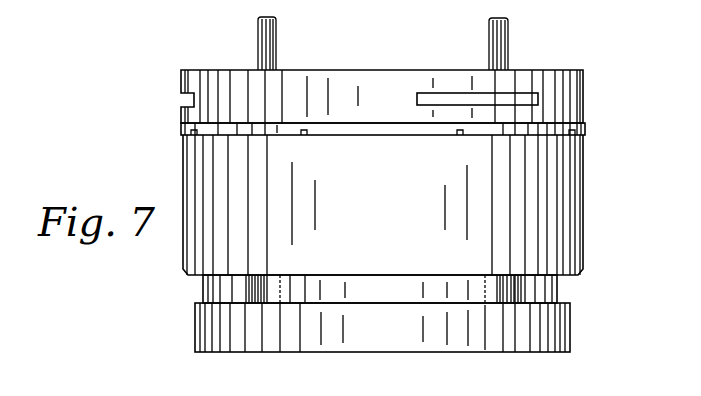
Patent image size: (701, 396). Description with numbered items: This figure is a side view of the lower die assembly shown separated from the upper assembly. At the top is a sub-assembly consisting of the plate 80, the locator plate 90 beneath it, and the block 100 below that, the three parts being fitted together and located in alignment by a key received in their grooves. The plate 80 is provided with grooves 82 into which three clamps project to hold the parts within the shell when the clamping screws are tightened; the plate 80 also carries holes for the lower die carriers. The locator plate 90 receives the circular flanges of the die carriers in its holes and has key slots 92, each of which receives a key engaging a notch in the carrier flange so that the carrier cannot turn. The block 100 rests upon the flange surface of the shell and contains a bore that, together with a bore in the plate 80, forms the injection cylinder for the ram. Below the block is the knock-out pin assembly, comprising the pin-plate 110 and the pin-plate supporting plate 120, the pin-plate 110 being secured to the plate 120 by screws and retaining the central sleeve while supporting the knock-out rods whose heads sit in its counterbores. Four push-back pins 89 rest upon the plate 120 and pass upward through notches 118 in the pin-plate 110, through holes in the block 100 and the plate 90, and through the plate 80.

The plate 80 is at (583, 95).
The grooves 82 is at (448, 99).
The push-back pins 89 is at (276, 36).
The locator plate 90 is at (585, 128).
The key slots 92 is at (304, 136).
The block 100 is at (583, 198).
The pin-plate 110 is at (557, 288).
The notches 118 is at (248, 282).
The pin-plate supporting plate 120 is at (570, 328).